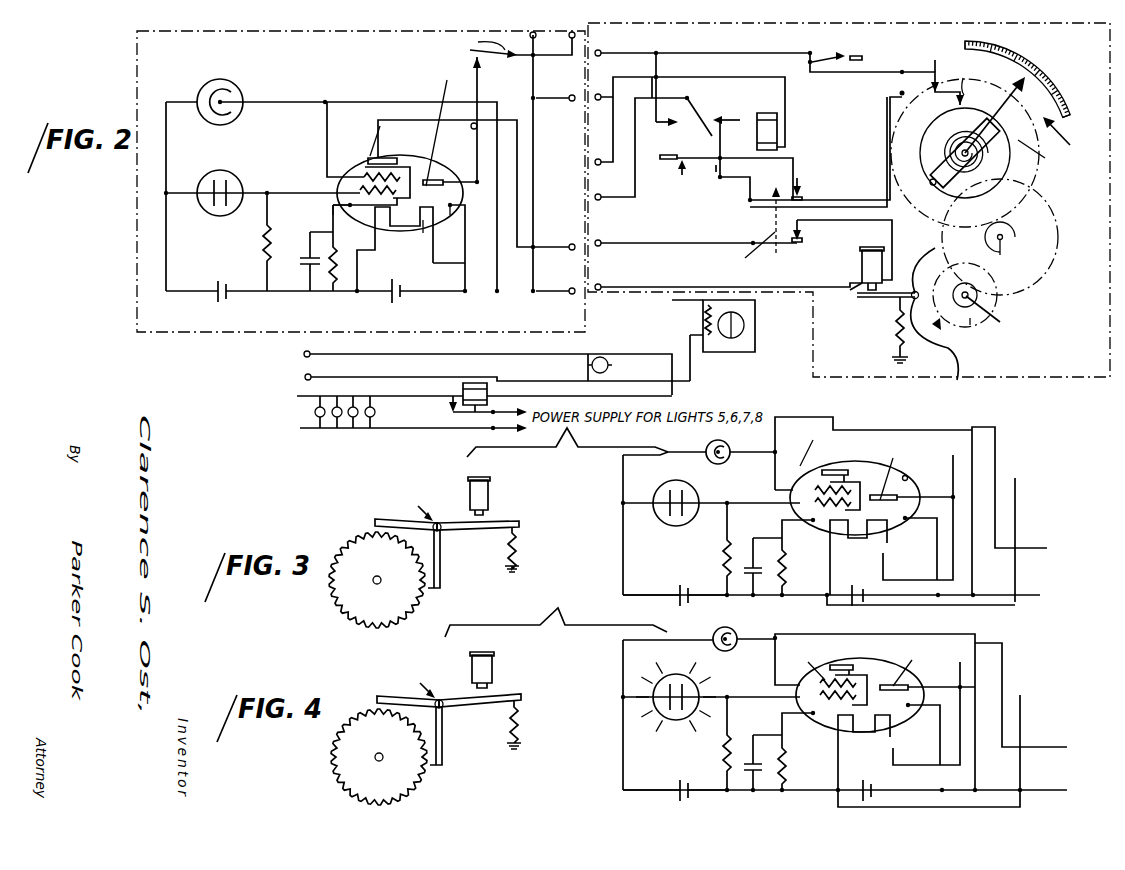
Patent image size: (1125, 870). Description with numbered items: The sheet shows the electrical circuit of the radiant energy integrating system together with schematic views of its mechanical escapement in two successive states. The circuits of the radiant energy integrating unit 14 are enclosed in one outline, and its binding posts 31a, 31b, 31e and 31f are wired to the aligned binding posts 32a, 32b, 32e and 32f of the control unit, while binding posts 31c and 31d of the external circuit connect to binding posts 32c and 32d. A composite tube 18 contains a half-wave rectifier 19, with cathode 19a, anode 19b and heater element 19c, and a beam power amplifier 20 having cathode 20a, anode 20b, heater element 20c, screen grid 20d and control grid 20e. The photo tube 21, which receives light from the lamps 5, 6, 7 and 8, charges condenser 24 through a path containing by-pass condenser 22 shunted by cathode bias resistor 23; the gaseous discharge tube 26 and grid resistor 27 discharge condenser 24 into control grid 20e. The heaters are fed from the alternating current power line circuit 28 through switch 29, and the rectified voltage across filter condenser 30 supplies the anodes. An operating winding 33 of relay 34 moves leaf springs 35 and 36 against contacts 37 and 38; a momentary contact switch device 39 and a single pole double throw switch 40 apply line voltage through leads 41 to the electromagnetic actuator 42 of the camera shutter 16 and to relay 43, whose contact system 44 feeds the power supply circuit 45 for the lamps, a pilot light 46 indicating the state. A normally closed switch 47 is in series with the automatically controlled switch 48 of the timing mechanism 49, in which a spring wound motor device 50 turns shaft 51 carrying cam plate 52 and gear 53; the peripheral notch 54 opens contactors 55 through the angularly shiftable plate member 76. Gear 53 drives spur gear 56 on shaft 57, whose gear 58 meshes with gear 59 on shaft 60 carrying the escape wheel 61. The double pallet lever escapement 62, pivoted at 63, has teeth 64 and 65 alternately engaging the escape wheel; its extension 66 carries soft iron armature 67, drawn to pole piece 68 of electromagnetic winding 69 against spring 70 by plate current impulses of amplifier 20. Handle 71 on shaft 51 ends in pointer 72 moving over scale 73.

In FIG. 2, the radiant energy integrating unit 14 is at (137, 173).
In FIG. 2, the camera shutter 16 is at (760, 342).
In FIG. 2, the composite tube 18 is at (410, 150).
In FIG. 3, the composite tube 18 is at (900, 496).
In FIG. 4, the composite tube 18 is at (881, 662).
In FIG. 2, the half-wave rectifier 19 is at (442, 121).
In FIG. 3, the half-wave rectifier 19 is at (898, 469).
In FIG. 4, the half-wave rectifier 19 is at (911, 666).
In FIG. 2, the cathode 19a is at (450, 213).
In FIG. 3, the cathode 19a is at (906, 524).
In FIG. 4, the cathode 19a is at (907, 712).
In FIG. 2, the anode 19b is at (470, 128).
In FIG. 3, the anode 19b is at (908, 476).
In FIG. 4, the anode 19b is at (908, 688).
In FIG. 2, the heater element 19c is at (425, 233).
In FIG. 3, the heater element 19c is at (890, 543).
In FIG. 4, the heater element 19c is at (892, 738).
In FIG. 2, the beam power amplifier 20 is at (364, 156).
In FIG. 3, the beam power amplifier 20 is at (862, 486).
In FIG. 4, the beam power amplifier 20 is at (856, 668).
In FIG. 2, the cathode 20a is at (345, 205).
In FIG. 3, the cathode 20a is at (820, 530).
In FIG. 4, the cathode 20a is at (816, 725).
In FIG. 2, the anode 20b is at (372, 155).
In FIG. 3, the anode 20b is at (840, 470).
In FIG. 4, the anode 20b is at (840, 664).
In FIG. 2, the heater element 20c is at (377, 245).
In FIG. 3, the heater element 20c is at (846, 545).
In FIG. 4, the heater element 20c is at (850, 740).
In FIG. 2, the screen grid 20d is at (387, 130).
In FIG. 3, the screen grid 20d is at (797, 446).
In FIG. 4, the screen grid 20d is at (806, 663).
In FIG. 2, the control grid 20e is at (332, 215).
In FIG. 3, the control grid 20e is at (795, 504).
In FIG. 4, the control grid 20e is at (803, 698).
In FIG. 2, the photo tube 21 is at (205, 91).
In FIG. 3, the photo tube 21 is at (707, 446).
In FIG. 4, the photo tube 21 is at (713, 637).
In FIG. 2, the by-pass condenser 22 is at (307, 268).
In FIG. 3, the by-pass condenser 22 is at (756, 582).
In FIG. 4, the by-pass condenser 22 is at (754, 776).
In FIG. 2, the cathode bias resistor 23 is at (340, 280).
In FIG. 3, the cathode bias resistor 23 is at (788, 582).
In FIG. 4, the cathode bias resistor 23 is at (793, 780).
In FIG. 2, the condenser 24 is at (212, 288).
In FIG. 3, the condenser 24 is at (676, 593).
In FIG. 4, the condenser 24 is at (676, 789).
In FIG. 2, the gaseous discharge tube 26 is at (224, 172).
In FIG. 3, the gaseous discharge tube 26 is at (667, 523).
In FIG. 4, the gaseous discharge tube 26 is at (658, 710).
In FIG. 2, the grid resistor 27 is at (262, 245).
In FIG. 3, the grid resistor 27 is at (722, 552).
In FIG. 4, the grid resistor 27 is at (722, 755).
In FIG. 2, the alternating current power line circuit 28 is at (520, 58).
In FIG. 2, the switch 29 is at (473, 41).
In FIG. 2, the filter condenser 30 is at (411, 291).
In FIG. 3, the filter condenser 30 is at (856, 591).
In FIG. 4, the filter condenser 30 is at (866, 786).
In FIG. 2, the binding post 31a is at (572, 40).
In FIG. 2, the binding post 31b is at (570, 101).
In FIG. 2, the binding post 31c is at (290, 379).
In FIG. 2, the binding post 31d is at (290, 355).
In FIG. 2, the binding post 31e is at (571, 250).
In FIG. 2, the binding post 31f is at (571, 294).
In FIG. 2, the binding post 32a is at (600, 50).
In FIG. 2, the binding post 32b is at (600, 94).
In FIG. 2, the binding post 32c is at (600, 165).
In FIG. 2, the binding post 32d is at (600, 200).
In FIG. 2, the binding post 32e is at (600, 246).
In FIG. 2, the binding post 32f is at (600, 290).
In FIG. 2, the operating winding 33 is at (782, 130).
In FIG. 2, the relay 34 is at (777, 110).
In FIG. 2, the leaf spring 35 is at (803, 198).
In FIG. 2, the leaf spring 36 is at (785, 230).
In FIG. 2, the contact 37 is at (805, 180).
In FIG. 2, the contact 38 is at (748, 252).
In FIG. 2, the momentary contact switch device 39 is at (716, 175).
In FIG. 2, the single pole double throw switch 40 is at (676, 128).
In FIG. 2, the leads 41 is at (381, 361).
In FIG. 2, the electromagnetic actuator 42 is at (705, 321).
In FIG. 2, the relay 43 is at (470, 383).
In FIG. 2, the contact system 44 is at (447, 410).
In FIG. 2, the power supply circuit 45 is at (418, 398).
In FIG. 2, the pilot light 46 is at (610, 365).
In FIG. 2, the momentary contact normally closed switch 47 is at (832, 64).
In FIG. 2, the automatically controlled switch 48 is at (935, 65).
In FIG. 2, the timing mechanism 49 is at (1070, 131).
In FIG. 2, the spring wound motor device 50 is at (940, 137).
In FIG. 2, the shaft 51 is at (944, 150).
In FIG. 2, the cam plate 52 is at (1006, 170).
In FIG. 2, the gear 53 is at (1046, 204).
In FIG. 2, the peripheral notch 54 is at (1041, 153).
In FIG. 2, the contactors 55 is at (900, 92).
In FIG. 2, the spur gear 56 is at (1016, 241).
In FIG. 2, the shaft 57 is at (1009, 253).
In FIG. 2, the gear 58 is at (1030, 290).
In FIG. 2, the gear 59 is at (980, 298).
In FIG. 2, the shaft 60 is at (996, 322).
In FIG. 3, the shaft 60 is at (377, 584).
In FIG. 4, the shaft 60 is at (386, 767).
In FIG. 2, the escape wheel 61 is at (975, 335).
In FIG. 3, the escape wheel 61 is at (348, 552).
In FIG. 4, the escape wheel 61 is at (364, 757).
In FIG. 2, the double pallet lever escapement 62 is at (940, 328).
In FIG. 3, the double pallet lever escapement 62 is at (415, 507).
In FIG. 4, the double pallet lever escapement 62 is at (414, 684).
In FIG. 2, the pivot 63 is at (914, 290).
In FIG. 3, the pivot 63 is at (438, 522).
In FIG. 4, the pivot 63 is at (436, 687).
In FIG. 2, the tooth 64 is at (928, 262).
In FIG. 3, the tooth 64 is at (374, 520).
In FIG. 4, the tooth 64 is at (392, 689).
In FIG. 2, the tooth 65 is at (957, 382).
In FIG. 3, the tooth 65 is at (440, 587).
In FIG. 4, the tooth 65 is at (449, 745).
In FIG. 2, the extension 66 is at (862, 300).
In FIG. 3, the extension 66 is at (473, 530).
In FIG. 4, the extension 66 is at (480, 712).
In FIG. 2, the soft iron armature 67 is at (882, 299).
In FIG. 3, the soft iron armature 67 is at (520, 524).
In FIG. 4, the soft iron armature 67 is at (542, 699).
In FIG. 2, the pole piece 68 is at (858, 288).
In FIG. 3, the pole piece 68 is at (490, 506).
In FIG. 4, the pole piece 68 is at (521, 670).
In FIG. 2, the electromagnetic winding 69 is at (862, 258).
In FIG. 3, the electromagnetic winding 69 is at (470, 479).
In FIG. 4, the electromagnetic winding 69 is at (494, 660).
In FIG. 2, the spring 70 is at (898, 332).
In FIG. 3, the spring 70 is at (517, 552).
In FIG. 4, the spring 70 is at (531, 724).
In FIG. 2, the handle 71 is at (990, 150).
In FIG. 2, the pointer 72 is at (1016, 78).
In FIG. 2, the scale 73 is at (1048, 66).
In FIG. 2, the angularly shiftable plate member 76 is at (954, 77).
In FIG. 2, the lamp 5 is at (318, 430).
In FIG. 2, the lamp 6 is at (336, 430).
In FIG. 2, the lamp 7 is at (352, 430).
In FIG. 2, the lamp 8 is at (369, 430).